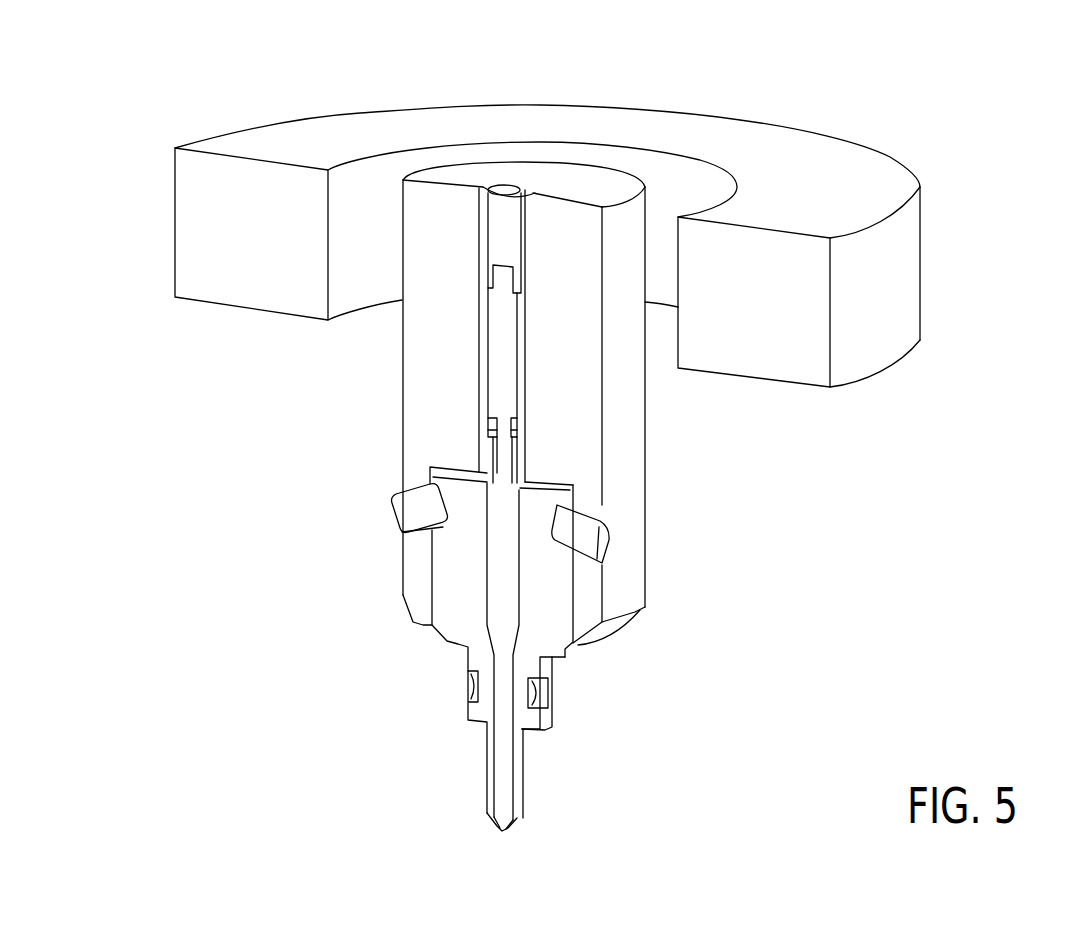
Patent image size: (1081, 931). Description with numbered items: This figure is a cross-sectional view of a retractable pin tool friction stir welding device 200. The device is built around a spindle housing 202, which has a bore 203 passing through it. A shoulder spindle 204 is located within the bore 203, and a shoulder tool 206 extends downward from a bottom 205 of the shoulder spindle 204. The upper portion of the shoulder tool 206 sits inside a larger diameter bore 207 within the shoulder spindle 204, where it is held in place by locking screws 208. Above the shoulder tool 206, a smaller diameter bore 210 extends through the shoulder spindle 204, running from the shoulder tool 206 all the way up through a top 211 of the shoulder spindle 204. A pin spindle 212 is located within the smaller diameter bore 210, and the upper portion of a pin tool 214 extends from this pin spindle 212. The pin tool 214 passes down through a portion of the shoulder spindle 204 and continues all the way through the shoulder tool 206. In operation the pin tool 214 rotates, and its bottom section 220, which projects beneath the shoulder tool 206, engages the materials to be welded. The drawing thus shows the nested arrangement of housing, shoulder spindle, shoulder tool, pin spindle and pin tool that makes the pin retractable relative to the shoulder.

The retractable pin tool friction stir welding device 200 is at (950, 95).
The spindle housing 202 is at (922, 260).
The bore 203 is at (682, 190).
The shoulder spindle 204 is at (635, 468).
The bottom of shoulder spindle 205 is at (613, 643).
The shoulder tool 206 is at (552, 697).
The larger diameter bore 207 is at (424, 626).
The locking screws 208 is at (583, 540).
The smaller diameter bore 210 is at (493, 449).
The top of shoulder spindle 211 is at (467, 177).
The pin spindle 212 is at (503, 205).
The pin tool 214 is at (498, 373).
The bottom section of pin tool 220 is at (501, 832).